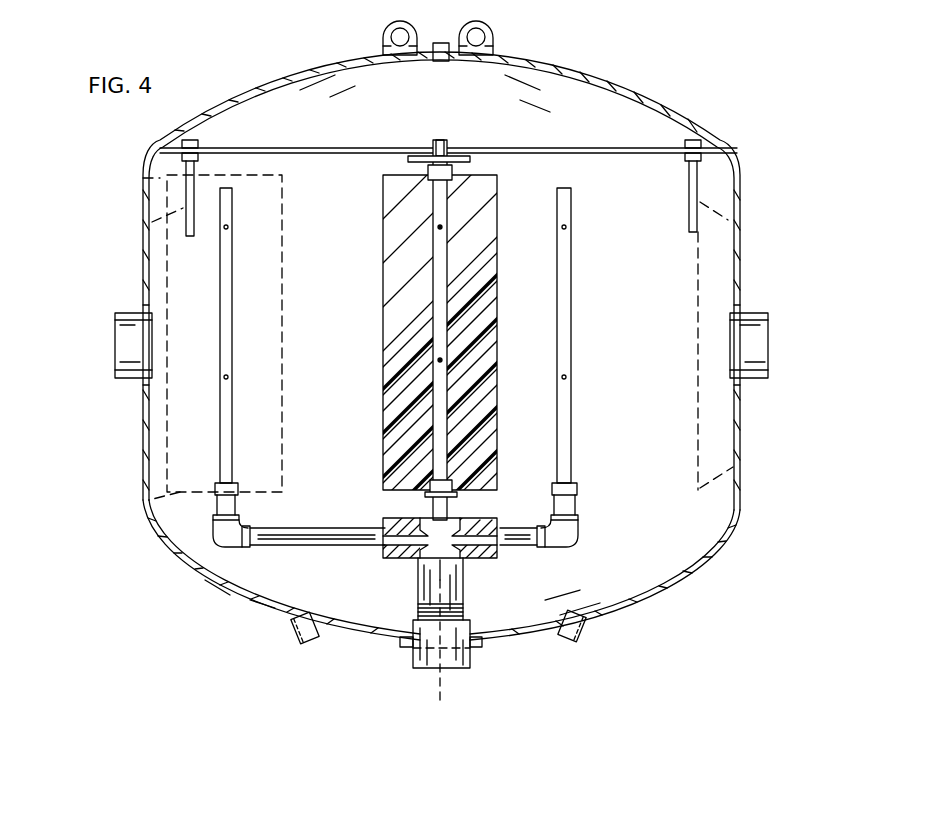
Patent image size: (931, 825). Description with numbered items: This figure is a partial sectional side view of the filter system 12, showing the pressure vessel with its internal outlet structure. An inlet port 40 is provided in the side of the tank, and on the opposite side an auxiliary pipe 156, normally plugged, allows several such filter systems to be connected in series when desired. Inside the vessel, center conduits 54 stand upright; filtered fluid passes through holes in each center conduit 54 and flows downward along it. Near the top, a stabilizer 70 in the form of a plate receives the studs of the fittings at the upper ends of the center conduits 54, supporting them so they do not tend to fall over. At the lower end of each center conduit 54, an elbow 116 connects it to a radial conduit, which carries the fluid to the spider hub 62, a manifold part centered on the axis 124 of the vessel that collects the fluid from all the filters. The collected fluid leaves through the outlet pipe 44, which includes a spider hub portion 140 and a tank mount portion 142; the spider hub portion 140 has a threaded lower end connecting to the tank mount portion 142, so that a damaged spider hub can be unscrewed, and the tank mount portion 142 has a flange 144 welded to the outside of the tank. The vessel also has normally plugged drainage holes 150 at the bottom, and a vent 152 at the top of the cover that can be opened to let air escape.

The filter system 12 is at (672, 72).
The vent 152 is at (469, 24).
The stabilizer 70 is at (548, 150).
The auxiliary pipe 156 is at (127, 313).
The inlet port 40 is at (754, 313).
The center conduit 54 is at (573, 423).
The elbow 116 is at (573, 530).
The spider hub 62 is at (393, 560).
The spider hub portion 140 is at (413, 590).
The axis 124 is at (437, 688).
The tank mount portion 142 is at (457, 670).
The flange 144 is at (482, 641).
The outlet pipe 44 is at (496, 661).
The drainage holes 150 is at (297, 628).